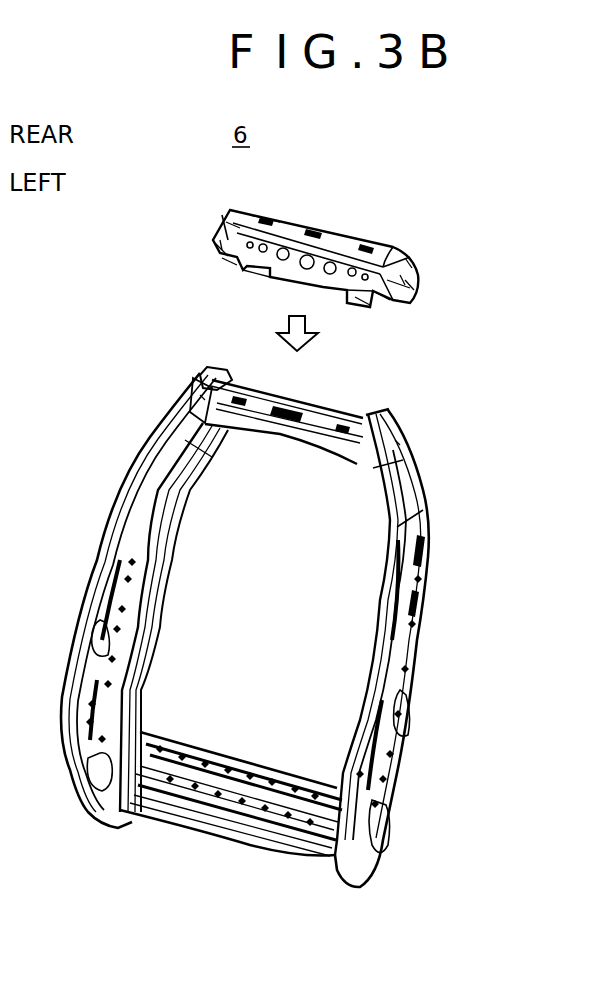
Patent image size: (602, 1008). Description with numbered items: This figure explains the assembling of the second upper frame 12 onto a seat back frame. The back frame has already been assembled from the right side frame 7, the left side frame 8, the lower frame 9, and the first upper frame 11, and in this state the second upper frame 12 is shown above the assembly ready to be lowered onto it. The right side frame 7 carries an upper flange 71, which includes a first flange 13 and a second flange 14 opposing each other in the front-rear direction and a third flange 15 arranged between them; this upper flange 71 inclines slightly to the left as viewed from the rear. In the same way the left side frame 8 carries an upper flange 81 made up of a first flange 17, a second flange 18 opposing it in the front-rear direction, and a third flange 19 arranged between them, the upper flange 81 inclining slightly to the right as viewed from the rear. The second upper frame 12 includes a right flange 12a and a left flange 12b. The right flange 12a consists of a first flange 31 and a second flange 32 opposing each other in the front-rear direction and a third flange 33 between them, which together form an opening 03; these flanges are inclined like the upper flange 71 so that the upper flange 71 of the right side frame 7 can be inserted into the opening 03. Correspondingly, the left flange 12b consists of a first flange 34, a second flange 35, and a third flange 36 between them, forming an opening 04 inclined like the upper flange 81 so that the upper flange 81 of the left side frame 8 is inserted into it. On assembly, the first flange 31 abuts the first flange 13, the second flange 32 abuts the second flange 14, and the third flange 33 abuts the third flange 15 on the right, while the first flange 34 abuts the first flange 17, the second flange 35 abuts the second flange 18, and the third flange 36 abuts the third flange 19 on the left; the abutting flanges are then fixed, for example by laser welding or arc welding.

The right side frame 7 is at (110, 495).
The left side frame 8 is at (383, 585).
The lower frame 9 is at (230, 766).
The first upper frame 11 is at (253, 428).
The second upper frame 12 is at (300, 205).
The right flange 12a is at (158, 168).
The left flange 12b is at (482, 226).
The first flange 13 is at (195, 410).
The second flange 14 is at (212, 370).
The third flange 15 is at (205, 385).
The first flange 17 is at (383, 458).
The second flange 18 is at (371, 412).
The third flange 19 is at (393, 444).
The first flange 31 is at (225, 252).
The second flange 32 is at (265, 207).
The third flange 33 is at (230, 225).
The first flange 34 is at (388, 300).
The second flange 35 is at (420, 268).
The third flange 36 is at (412, 285).
The upper flange 71 is at (135, 303).
The upper flange 81 is at (440, 355).
The opening 03 is at (228, 264).
The opening 04 is at (383, 303).